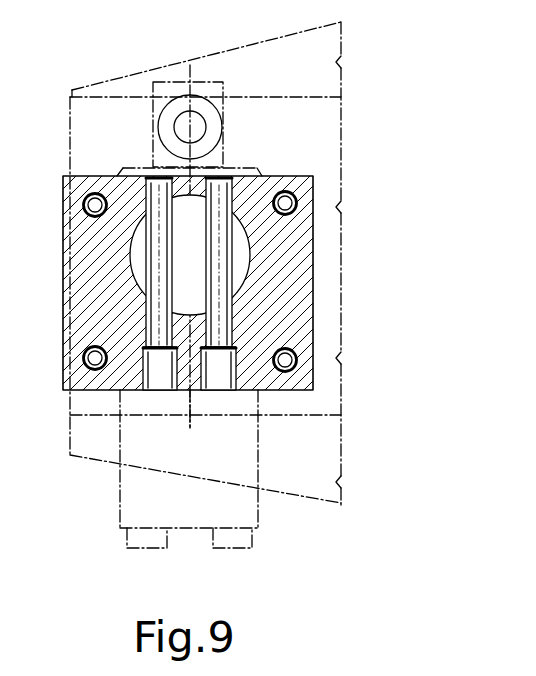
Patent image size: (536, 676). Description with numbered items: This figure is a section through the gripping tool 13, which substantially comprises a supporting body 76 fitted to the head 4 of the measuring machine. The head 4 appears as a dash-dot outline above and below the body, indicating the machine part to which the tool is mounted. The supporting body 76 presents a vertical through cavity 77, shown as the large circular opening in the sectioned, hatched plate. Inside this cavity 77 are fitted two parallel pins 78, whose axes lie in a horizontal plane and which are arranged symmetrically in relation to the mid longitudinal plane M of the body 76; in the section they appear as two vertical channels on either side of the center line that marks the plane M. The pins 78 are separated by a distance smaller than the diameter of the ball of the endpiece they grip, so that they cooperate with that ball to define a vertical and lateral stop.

The head 4 is at (263, 125).
The gripping tool 13 is at (259, 250).
The supporting body 76 is at (88, 332).
The vertical through cavity 77 is at (141, 246).
The pins 78 is at (163, 288).
The mid longitudinal plane M is at (190, 424).